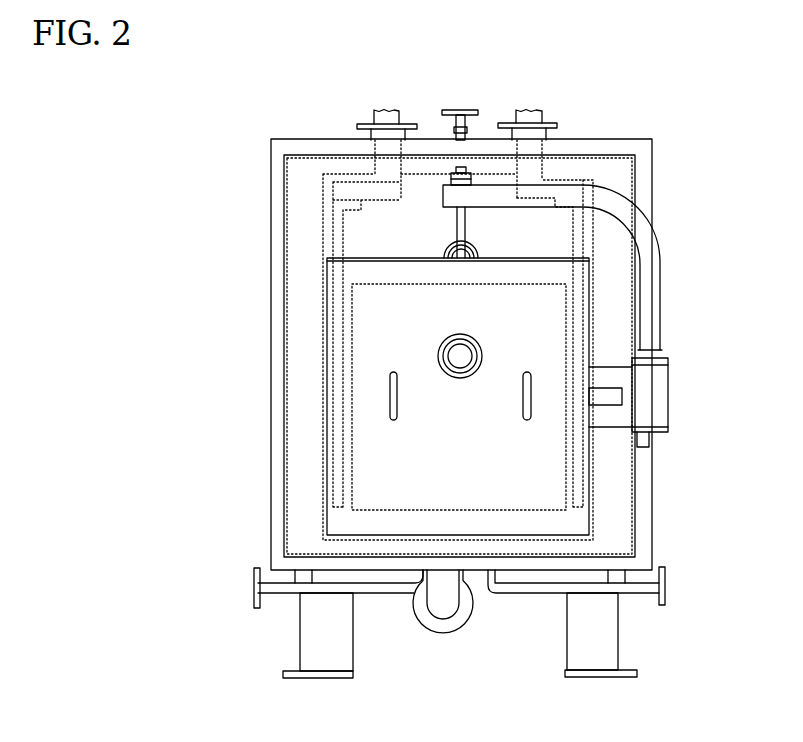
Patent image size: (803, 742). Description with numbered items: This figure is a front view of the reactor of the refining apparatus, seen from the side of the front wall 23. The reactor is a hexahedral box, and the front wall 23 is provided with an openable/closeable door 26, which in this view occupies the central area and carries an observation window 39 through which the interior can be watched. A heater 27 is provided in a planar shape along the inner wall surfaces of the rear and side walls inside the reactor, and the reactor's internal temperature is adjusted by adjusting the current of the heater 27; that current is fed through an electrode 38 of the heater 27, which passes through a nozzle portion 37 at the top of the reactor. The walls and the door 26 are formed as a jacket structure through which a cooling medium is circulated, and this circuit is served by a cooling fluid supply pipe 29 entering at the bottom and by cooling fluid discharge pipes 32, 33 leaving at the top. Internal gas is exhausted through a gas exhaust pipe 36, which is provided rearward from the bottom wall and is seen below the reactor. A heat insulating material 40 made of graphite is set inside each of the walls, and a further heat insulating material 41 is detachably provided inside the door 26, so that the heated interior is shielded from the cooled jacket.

The front wall 23 is at (297, 456).
The door 26 is at (370, 356).
The heater 27 is at (332, 233).
The cooling fluid supply pipe 29 is at (256, 592).
The cooling fluid discharge pipe 32 is at (452, 106).
The cooling fluid discharge pipe 33 is at (468, 130).
The gas exhaust pipe 36 is at (443, 613).
The nozzle portion 37 is at (366, 125).
The electrode 38 is at (389, 112).
The observation window 39 is at (459, 362).
The heat insulating material 40 is at (614, 484).
The heat insulating material 41 is at (363, 493).